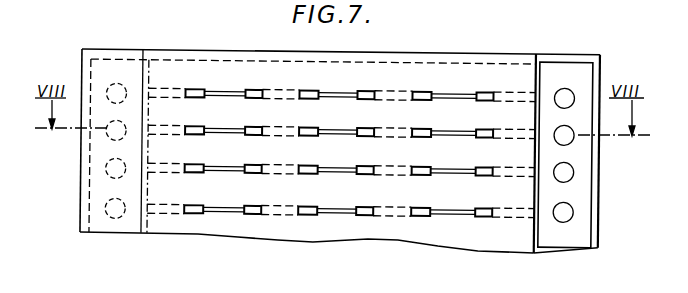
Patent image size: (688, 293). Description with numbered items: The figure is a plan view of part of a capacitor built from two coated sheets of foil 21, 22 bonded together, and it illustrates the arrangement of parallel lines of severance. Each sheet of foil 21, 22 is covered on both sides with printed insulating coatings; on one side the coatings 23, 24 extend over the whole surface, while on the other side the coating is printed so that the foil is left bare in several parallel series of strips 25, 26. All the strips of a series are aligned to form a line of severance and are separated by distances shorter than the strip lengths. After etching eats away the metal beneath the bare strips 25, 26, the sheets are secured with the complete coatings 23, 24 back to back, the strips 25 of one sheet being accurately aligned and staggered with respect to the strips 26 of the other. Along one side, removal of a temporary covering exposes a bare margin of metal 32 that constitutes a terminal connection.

The sheet of foil 21 is at (443, 79).
The sheet of foil 22 is at (105, 189).
The coating 23 is at (575, 58).
The coating 24 is at (93, 152).
The strips 25 is at (232, 91).
The strips 26 is at (391, 91).
The bare margin of metal 32 is at (580, 160).